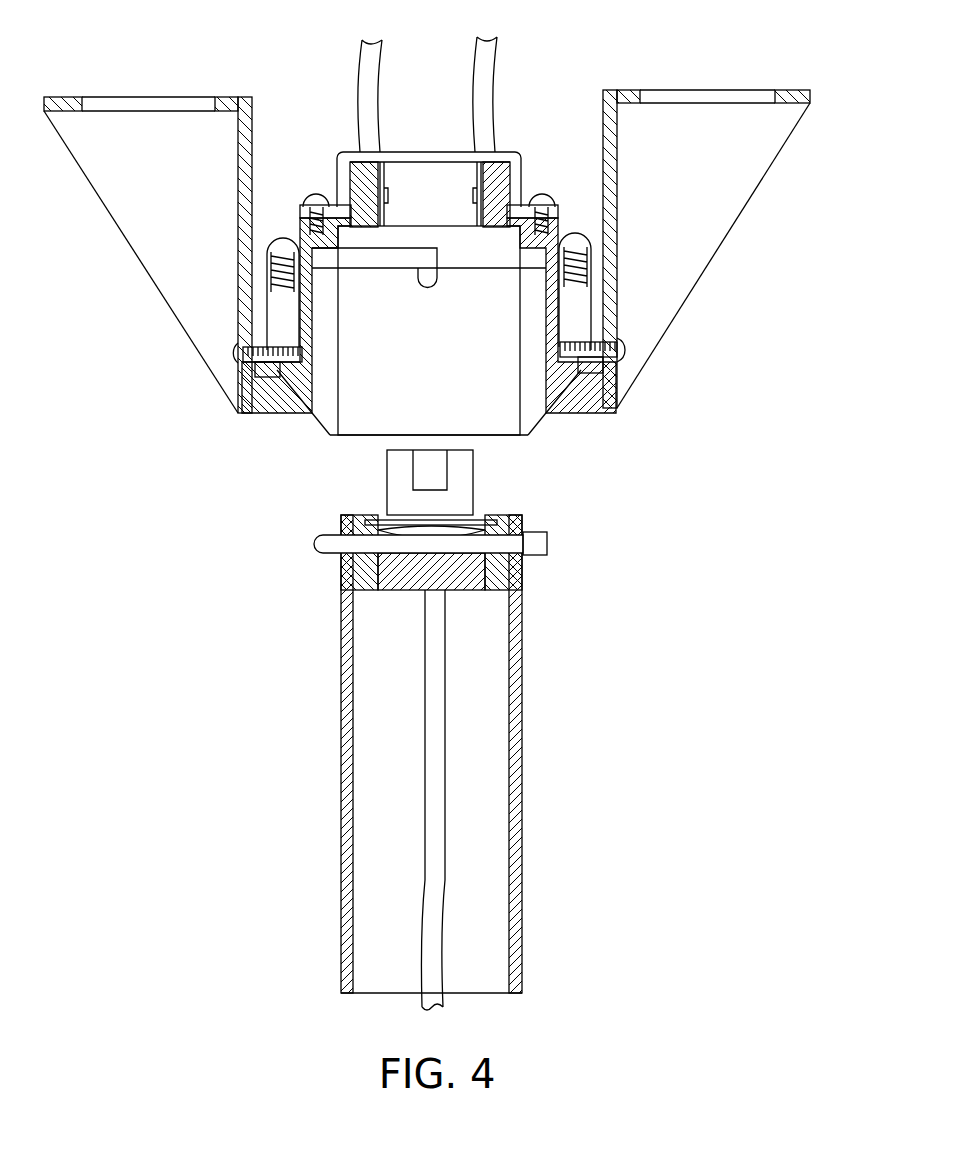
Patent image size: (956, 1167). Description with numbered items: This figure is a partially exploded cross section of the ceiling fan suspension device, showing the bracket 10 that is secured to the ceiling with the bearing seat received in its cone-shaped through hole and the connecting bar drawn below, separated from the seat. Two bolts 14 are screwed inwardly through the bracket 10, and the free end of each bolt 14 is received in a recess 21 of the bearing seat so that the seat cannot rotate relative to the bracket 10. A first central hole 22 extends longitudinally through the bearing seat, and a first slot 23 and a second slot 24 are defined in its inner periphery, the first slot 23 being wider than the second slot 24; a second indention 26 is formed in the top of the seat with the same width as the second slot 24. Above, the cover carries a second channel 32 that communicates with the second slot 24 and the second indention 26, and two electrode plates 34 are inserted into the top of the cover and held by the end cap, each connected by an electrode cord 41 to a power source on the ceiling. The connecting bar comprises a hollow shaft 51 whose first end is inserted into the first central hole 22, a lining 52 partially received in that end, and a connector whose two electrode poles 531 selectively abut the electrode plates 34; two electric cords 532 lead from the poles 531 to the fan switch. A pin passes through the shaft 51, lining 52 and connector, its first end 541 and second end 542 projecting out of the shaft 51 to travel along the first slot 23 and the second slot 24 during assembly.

The bracket 10 is at (156, 309).
The bolt 14 is at (623, 345).
The recess 21 is at (582, 310).
The first central hole 22 is at (502, 417).
The first slot 23 is at (533, 412).
The second slot 24 is at (328, 413).
The second indention 26 is at (428, 280).
The second channel 32 is at (378, 260).
The electrode plate 34 is at (387, 200).
The electrode cord 41 is at (487, 72).
The hollow shaft 51 is at (515, 685).
The lining 52 is at (513, 580).
The electrode pole 531 is at (427, 465).
The electric cord 532 is at (433, 747).
The first end of the pin 541 is at (538, 548).
The second end of the pin 542 is at (323, 555).